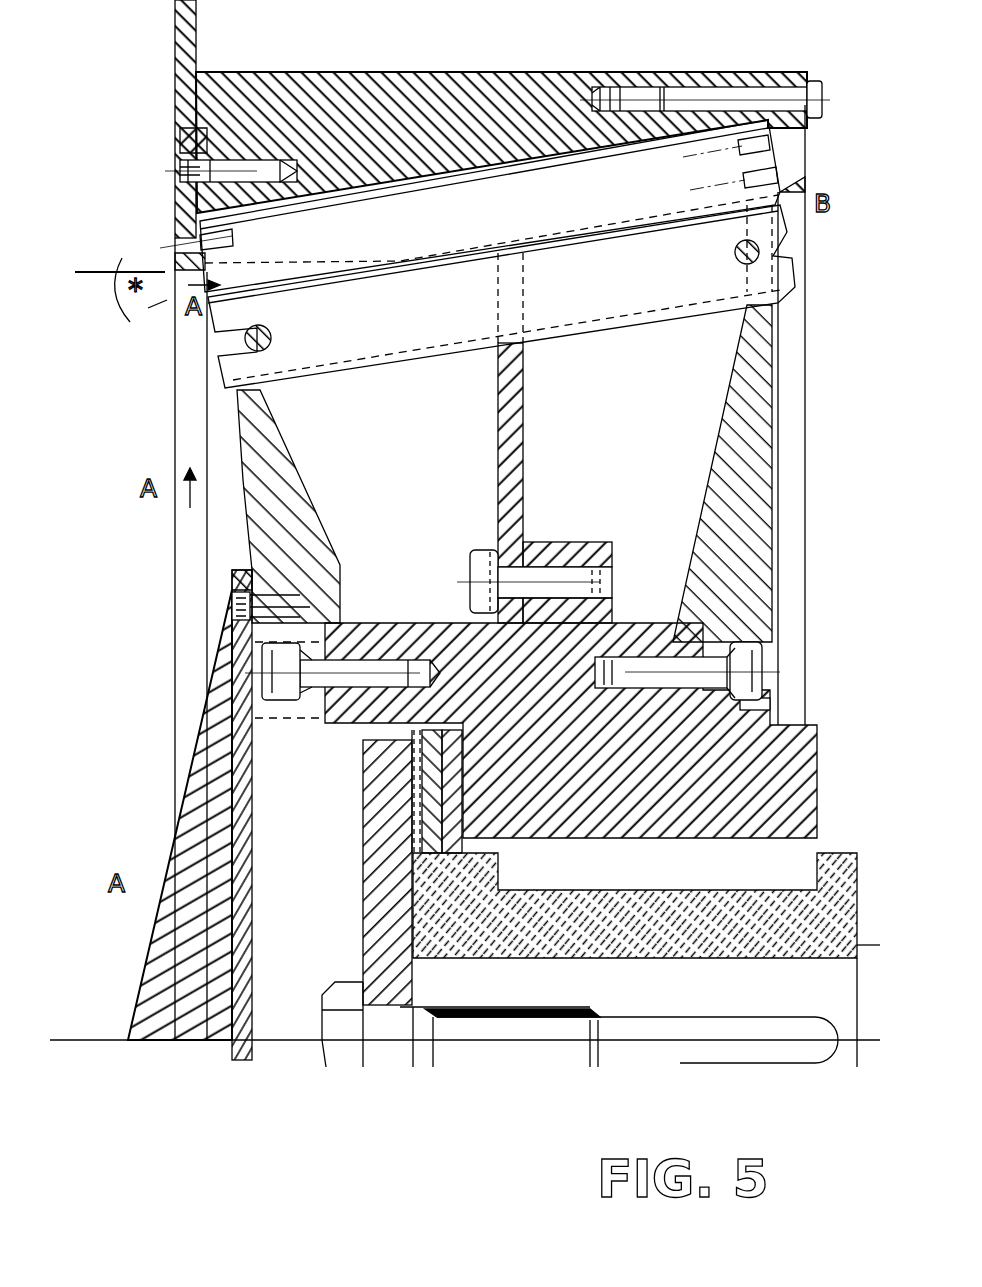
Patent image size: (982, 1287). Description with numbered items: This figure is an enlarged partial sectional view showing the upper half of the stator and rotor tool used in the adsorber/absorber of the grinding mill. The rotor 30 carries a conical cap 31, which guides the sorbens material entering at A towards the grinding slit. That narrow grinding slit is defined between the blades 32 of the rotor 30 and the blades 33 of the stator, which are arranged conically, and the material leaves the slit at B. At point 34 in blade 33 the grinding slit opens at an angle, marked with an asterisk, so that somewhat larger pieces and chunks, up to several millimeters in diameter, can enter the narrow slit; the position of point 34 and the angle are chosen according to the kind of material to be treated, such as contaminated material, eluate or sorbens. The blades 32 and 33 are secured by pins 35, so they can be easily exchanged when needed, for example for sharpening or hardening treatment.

The rotor 30 is at (695, 943).
The conical cap 31 is at (205, 815).
The blades of rotor 32 is at (490, 330).
The blades of stator 33 is at (490, 233).
The point in blade 34 is at (492, 287).
The pins 35 is at (502, 296).